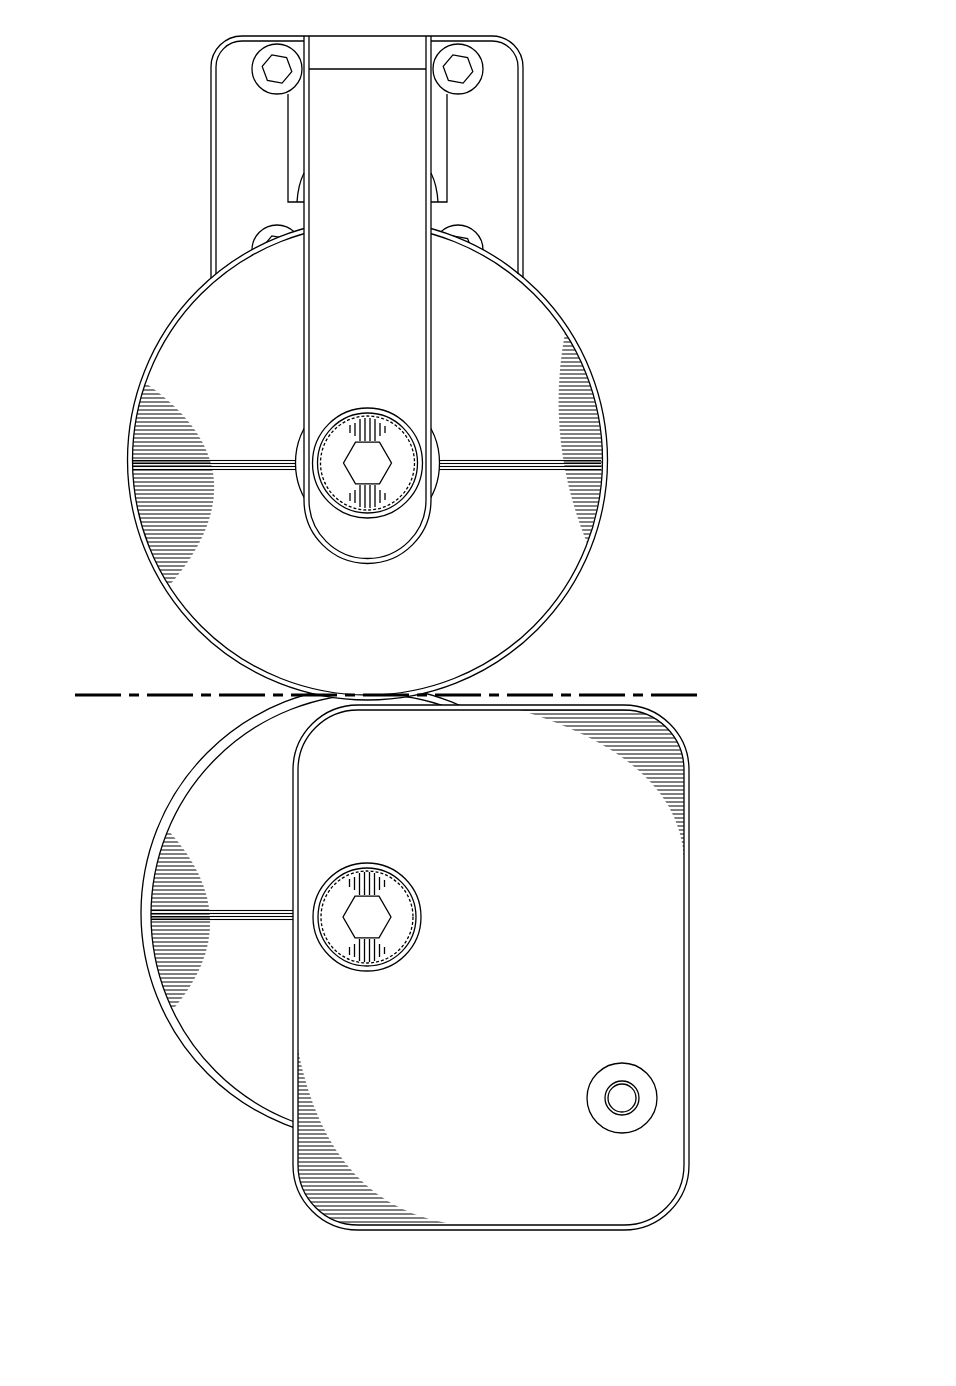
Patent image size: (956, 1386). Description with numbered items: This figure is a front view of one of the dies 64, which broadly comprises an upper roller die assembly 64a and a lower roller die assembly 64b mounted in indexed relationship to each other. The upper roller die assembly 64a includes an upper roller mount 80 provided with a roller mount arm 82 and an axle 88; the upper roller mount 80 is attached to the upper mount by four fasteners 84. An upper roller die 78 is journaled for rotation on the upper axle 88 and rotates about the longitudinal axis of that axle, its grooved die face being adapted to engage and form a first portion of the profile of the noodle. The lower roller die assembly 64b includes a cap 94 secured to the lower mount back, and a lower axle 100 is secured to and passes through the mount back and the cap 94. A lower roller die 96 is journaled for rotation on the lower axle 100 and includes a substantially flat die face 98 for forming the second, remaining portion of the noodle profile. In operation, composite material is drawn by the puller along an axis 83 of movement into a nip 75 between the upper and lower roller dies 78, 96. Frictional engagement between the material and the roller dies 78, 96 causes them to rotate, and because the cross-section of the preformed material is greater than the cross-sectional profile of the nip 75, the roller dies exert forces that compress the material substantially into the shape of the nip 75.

The die 64 is at (674, 54).
The upper roller die assembly 64a is at (155, 155).
The lower roller die assembly 64b is at (101, 791).
The nip 75 is at (207, 677).
The upper roller die 78 is at (157, 348).
The upper roller mount 80 is at (525, 104).
The roller mount arm 82 is at (381, 274).
The axis of movement 83 is at (172, 698).
The fasteners 84 is at (467, 226).
The axle 88 is at (386, 408).
The cap 94 is at (576, 876).
The lower roller die 96 is at (256, 842).
The die face 98 is at (129, 911).
The lower axle 100 is at (390, 967).